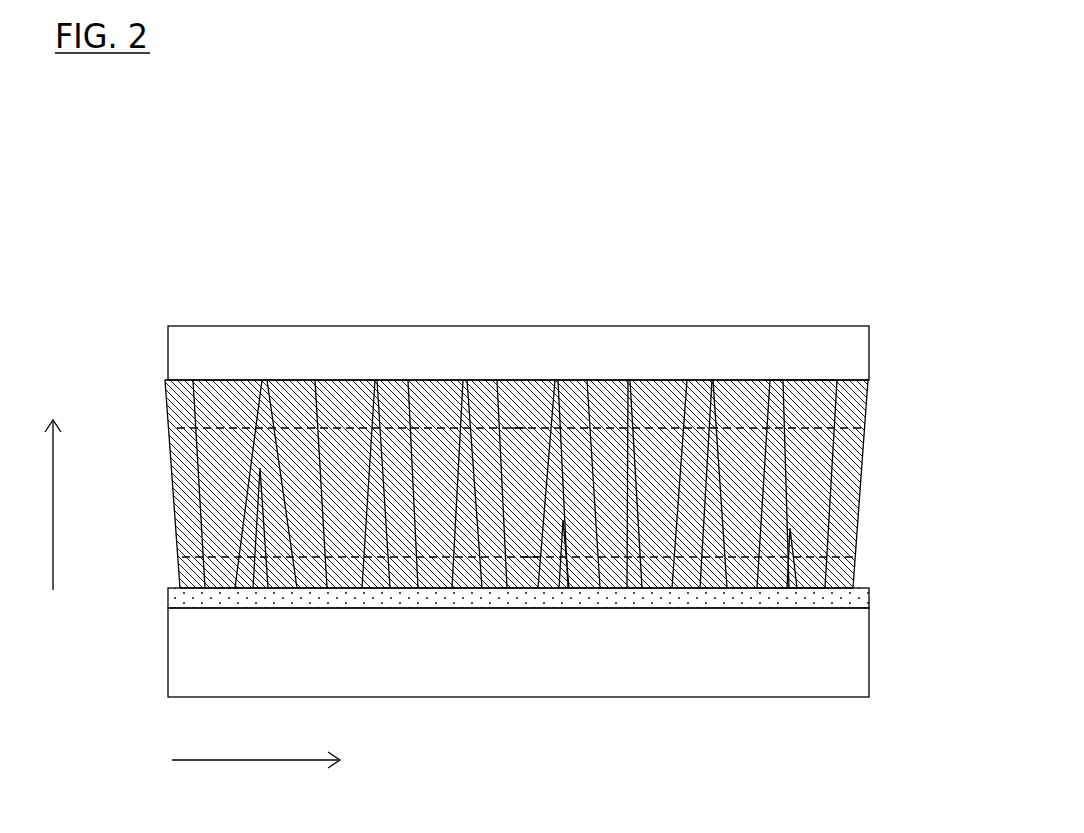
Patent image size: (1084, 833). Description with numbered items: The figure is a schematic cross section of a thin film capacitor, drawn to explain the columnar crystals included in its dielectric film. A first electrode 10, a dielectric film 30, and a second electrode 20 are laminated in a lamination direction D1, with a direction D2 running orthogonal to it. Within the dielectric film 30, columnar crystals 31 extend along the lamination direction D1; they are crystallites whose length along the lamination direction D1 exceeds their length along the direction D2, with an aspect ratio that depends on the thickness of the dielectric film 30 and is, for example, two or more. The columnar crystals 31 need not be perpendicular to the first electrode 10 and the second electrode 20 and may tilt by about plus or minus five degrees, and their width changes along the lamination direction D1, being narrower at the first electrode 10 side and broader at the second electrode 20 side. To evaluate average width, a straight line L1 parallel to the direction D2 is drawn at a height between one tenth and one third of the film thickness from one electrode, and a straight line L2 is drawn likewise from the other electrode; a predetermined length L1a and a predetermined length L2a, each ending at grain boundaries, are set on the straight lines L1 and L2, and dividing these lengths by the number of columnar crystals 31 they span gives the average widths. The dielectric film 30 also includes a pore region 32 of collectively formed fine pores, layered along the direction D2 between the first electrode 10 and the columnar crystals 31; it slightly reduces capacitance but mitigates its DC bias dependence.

The first electrode 10 is at (840, 665).
The second electrode 20 is at (837, 355).
The dielectric film 30 is at (148, 381).
The columnar crystals 31 is at (820, 483).
The pore region 32 is at (857, 600).
The straight line L1 is at (858, 545).
The straight line L2 is at (863, 420).
The predetermined length L1a is at (530, 557).
The predetermined length L2a is at (518, 428).
The lamination direction D1 is at (56, 523).
The direction orthogonal to the lamination direction D2 is at (233, 761).